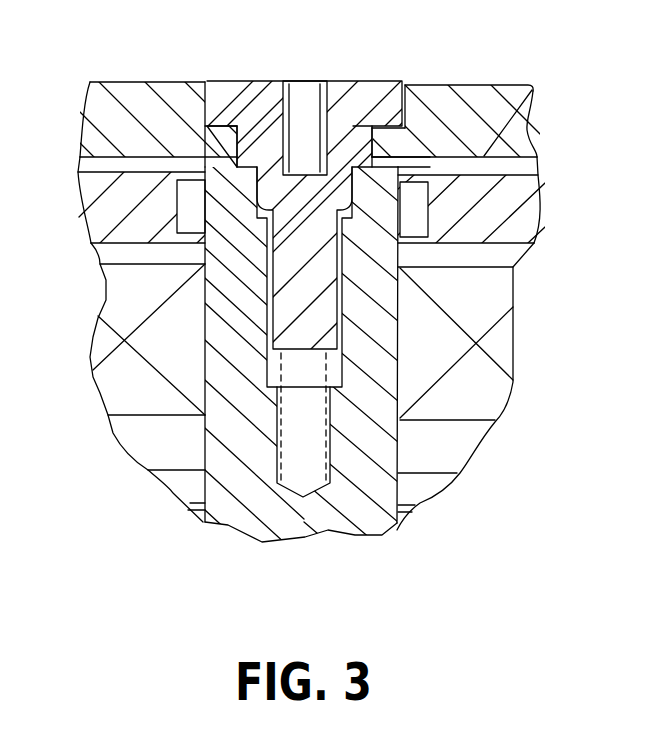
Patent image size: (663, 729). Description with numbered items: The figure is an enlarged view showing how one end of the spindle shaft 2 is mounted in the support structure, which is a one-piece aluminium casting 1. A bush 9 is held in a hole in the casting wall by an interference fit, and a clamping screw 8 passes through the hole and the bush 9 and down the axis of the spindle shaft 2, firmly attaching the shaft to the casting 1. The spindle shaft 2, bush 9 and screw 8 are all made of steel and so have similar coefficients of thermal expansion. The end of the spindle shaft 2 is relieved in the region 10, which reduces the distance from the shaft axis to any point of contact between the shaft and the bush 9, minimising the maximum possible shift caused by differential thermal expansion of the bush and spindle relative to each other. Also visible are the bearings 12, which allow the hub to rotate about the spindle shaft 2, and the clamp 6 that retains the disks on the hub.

The one-piece aluminium casting 1 is at (147, 82).
The spindle shaft 2 is at (392, 321).
The clamp 6 is at (107, 219).
The clamping screw 8 is at (370, 81).
The bush 9 is at (385, 144).
The relieved region 10 is at (412, 165).
The bearings 12 is at (112, 335).